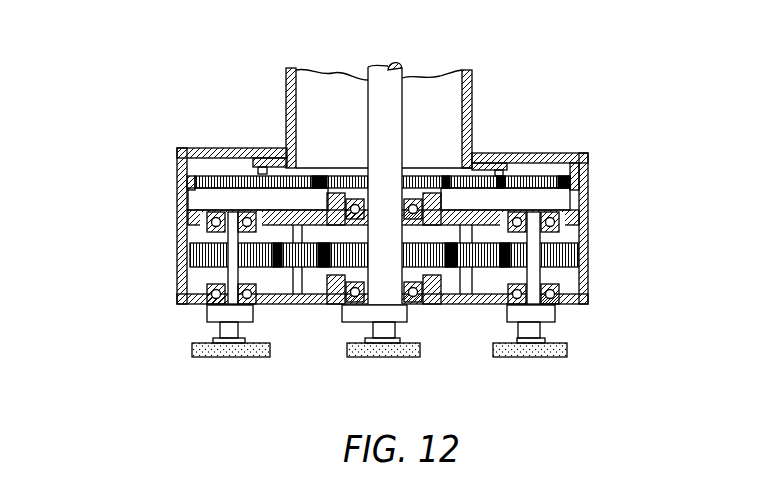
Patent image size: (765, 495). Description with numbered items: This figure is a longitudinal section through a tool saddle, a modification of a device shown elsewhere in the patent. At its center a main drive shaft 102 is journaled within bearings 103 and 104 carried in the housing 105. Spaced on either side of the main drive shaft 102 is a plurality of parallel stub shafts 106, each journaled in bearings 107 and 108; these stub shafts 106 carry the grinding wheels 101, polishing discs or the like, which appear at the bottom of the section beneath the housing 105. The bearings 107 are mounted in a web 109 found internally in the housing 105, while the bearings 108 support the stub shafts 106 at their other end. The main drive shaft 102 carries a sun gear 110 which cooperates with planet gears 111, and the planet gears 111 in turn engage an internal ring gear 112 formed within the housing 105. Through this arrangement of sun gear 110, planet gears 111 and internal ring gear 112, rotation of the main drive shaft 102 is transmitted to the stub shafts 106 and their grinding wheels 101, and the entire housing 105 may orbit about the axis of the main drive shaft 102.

The grinding wheels 101 is at (236, 350).
The main drive shaft 102 is at (384, 107).
The bearing 103 is at (338, 182).
The bearing 104 is at (430, 304).
The housing 105 is at (584, 183).
The stub shafts 106 is at (178, 273).
The bearings 107 is at (186, 222).
The bearings 108 is at (208, 293).
The web 109 is at (178, 203).
The sun gear 110 is at (410, 188).
The planet gears 111 is at (261, 184).
The internal ring gear 112 is at (186, 183).